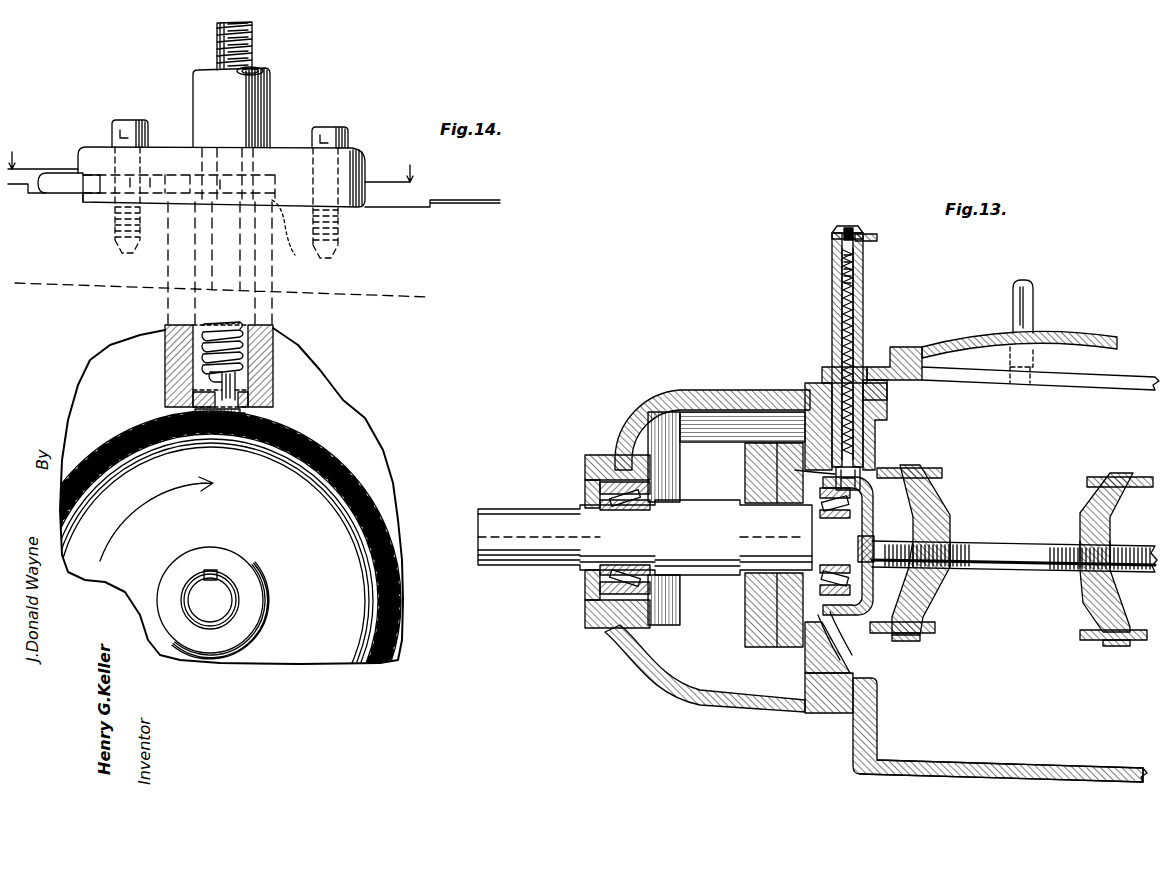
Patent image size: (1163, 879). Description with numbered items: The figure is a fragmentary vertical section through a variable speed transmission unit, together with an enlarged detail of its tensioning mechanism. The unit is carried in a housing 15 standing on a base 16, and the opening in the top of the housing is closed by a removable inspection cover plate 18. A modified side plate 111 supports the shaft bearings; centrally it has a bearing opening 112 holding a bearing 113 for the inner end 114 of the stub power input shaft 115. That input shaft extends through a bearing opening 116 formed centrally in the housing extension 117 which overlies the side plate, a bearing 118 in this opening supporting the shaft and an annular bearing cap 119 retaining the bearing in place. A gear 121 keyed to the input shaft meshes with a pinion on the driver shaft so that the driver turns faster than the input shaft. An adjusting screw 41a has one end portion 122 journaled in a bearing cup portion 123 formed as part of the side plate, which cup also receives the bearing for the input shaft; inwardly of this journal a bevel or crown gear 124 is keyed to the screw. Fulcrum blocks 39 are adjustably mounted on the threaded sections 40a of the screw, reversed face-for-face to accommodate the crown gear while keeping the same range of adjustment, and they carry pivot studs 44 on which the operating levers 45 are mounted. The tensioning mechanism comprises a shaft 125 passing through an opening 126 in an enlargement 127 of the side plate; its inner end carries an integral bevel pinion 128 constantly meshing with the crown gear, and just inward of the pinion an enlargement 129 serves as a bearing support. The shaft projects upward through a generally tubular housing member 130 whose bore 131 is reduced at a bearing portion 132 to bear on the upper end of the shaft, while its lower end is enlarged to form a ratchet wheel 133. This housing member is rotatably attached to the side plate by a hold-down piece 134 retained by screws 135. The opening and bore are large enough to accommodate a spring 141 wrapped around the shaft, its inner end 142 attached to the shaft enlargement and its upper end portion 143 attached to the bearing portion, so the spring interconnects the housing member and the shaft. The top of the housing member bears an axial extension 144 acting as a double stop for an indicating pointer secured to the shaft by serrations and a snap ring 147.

In FIG. 14, the housing 15 is at (254, 172).
In FIG. 13, the housing 15 is at (850, 748).
In FIG. 13, the base 16 is at (952, 775).
In FIG. 13, the removable inspection cover plate 18 is at (972, 335).
In FIG. 13, the fulcrum blocks 39 is at (950, 522).
In FIG. 13, the threaded sections 40a is at (950, 563).
In FIG. 13, the adjusting screw 41a is at (1006, 545).
In FIG. 13, the pivot studs 44 is at (910, 466).
In FIG. 13, the operating levers 45 is at (942, 470).
In FIG. 13, the side plate 111 is at (815, 714).
In FIG. 13, the bearing opening 112 is at (822, 630).
In FIG. 13, the bearing 113 is at (830, 622).
In FIG. 13, the inner end 114 is at (822, 549).
In FIG. 13, the stub power input shaft 115 is at (708, 580).
In FIG. 13, the bearing opening 116 is at (600, 628).
In FIG. 13, the housing extension 117 is at (702, 690).
In FIG. 13, the bearing 118 is at (645, 622).
In FIG. 13, the annular bearing cap 119 is at (590, 490).
In FIG. 13, the gear 121 is at (770, 648).
In FIG. 14, the end portion 122 is at (212, 606).
In FIG. 13, the end portion 122 is at (856, 523).
In FIG. 13, the bearing cup portion 123 is at (860, 604).
In FIG. 14, the bevel or crown gear 124 is at (402, 622).
In FIG. 13, the bevel or crown gear 124 is at (864, 580).
In FIG. 14, the shaft 125 is at (248, 34).
In FIG. 13, the shaft 125 is at (832, 355).
In FIG. 13, the opening 126 is at (872, 440).
In FIG. 14, the enlargement 127 is at (274, 345).
In FIG. 13, the enlargement 127 is at (866, 457).
In FIG. 14, the bevel pinion 128 is at (218, 426).
In FIG. 13, the bevel pinion 128 is at (795, 470).
In FIG. 14, the enlargement 129 is at (250, 402).
In FIG. 13, the enlargement 129 is at (862, 482).
In FIG. 14, the housing member 130 is at (270, 108).
In FIG. 13, the housing member 130 is at (833, 308).
In FIG. 14, the bore 131 is at (262, 70).
In FIG. 13, the bore 131 is at (838, 287).
In FIG. 13, the bearing portion 132 is at (870, 244).
In FIG. 14, the ratchet wheel 133 is at (176, 222).
In FIG. 13, the ratchet wheel 133 is at (822, 372).
In FIG. 14, the hold-down piece 134 is at (362, 168).
In FIG. 14, the screws 135 is at (112, 122).
In FIG. 14, the spring 141 is at (215, 38).
In FIG. 13, the spring 141 is at (863, 305).
In FIG. 14, the inner end 142 is at (167, 400).
In FIG. 13, the inner end 142 is at (790, 448).
In FIG. 13, the upper end portion 143 is at (835, 249).
In FIG. 13, the axial extension 144 is at (833, 235).
In FIG. 13, the snap ring 147 is at (852, 230).